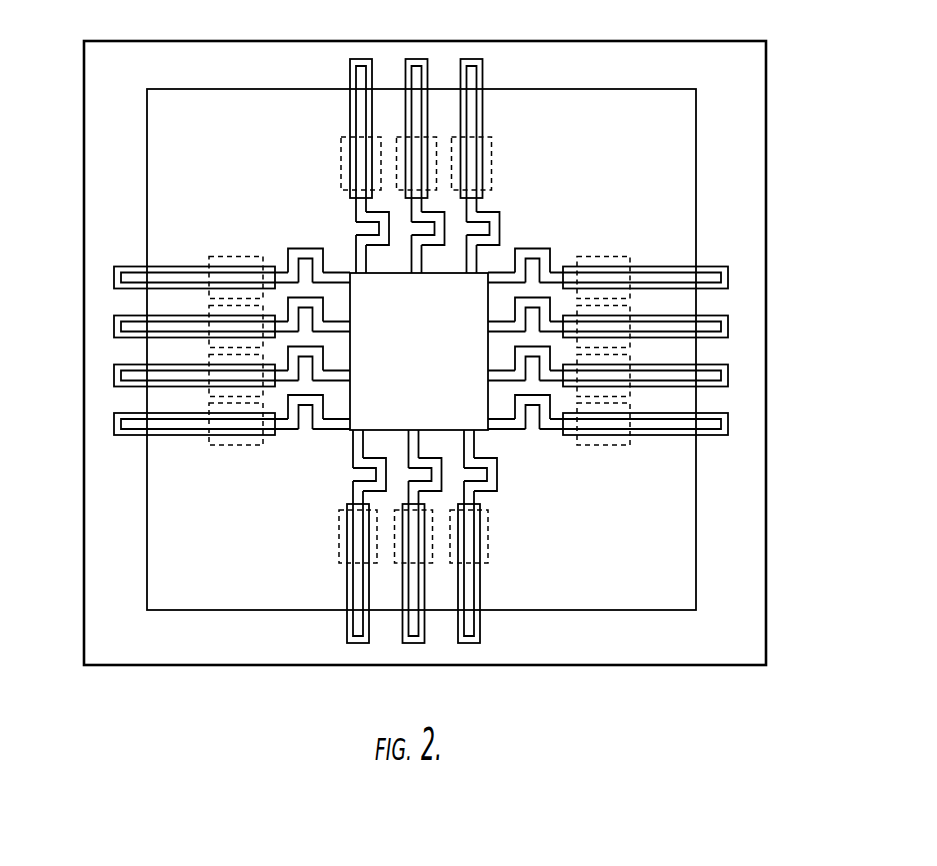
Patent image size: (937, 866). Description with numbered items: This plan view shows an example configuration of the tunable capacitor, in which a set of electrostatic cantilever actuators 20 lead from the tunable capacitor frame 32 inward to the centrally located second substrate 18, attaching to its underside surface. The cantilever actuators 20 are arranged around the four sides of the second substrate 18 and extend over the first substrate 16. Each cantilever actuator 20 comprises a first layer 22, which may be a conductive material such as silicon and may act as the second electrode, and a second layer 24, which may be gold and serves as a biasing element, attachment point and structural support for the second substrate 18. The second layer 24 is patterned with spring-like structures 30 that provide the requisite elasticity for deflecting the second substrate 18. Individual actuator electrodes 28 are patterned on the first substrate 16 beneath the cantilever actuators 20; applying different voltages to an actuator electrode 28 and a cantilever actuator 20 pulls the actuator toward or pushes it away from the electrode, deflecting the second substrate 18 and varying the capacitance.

The first substrate 16 is at (663, 585).
The second substrate 18 is at (430, 360).
The electrostatic cantilever actuator 20 is at (472, 67).
The first layer 22 is at (186, 267).
The second layer 24 is at (588, 423).
The actuator electrode 28 is at (342, 183).
The spring-like structure 30 is at (307, 252).
The tunable capacitor frame 32 is at (745, 170).